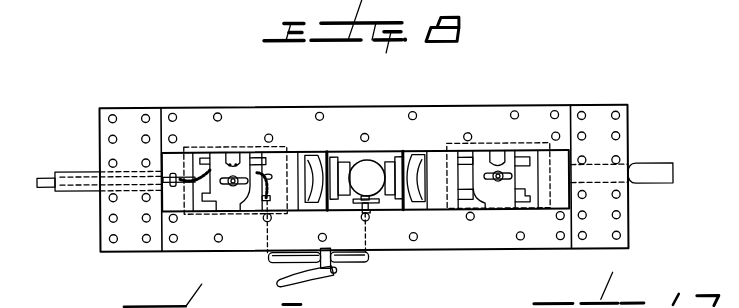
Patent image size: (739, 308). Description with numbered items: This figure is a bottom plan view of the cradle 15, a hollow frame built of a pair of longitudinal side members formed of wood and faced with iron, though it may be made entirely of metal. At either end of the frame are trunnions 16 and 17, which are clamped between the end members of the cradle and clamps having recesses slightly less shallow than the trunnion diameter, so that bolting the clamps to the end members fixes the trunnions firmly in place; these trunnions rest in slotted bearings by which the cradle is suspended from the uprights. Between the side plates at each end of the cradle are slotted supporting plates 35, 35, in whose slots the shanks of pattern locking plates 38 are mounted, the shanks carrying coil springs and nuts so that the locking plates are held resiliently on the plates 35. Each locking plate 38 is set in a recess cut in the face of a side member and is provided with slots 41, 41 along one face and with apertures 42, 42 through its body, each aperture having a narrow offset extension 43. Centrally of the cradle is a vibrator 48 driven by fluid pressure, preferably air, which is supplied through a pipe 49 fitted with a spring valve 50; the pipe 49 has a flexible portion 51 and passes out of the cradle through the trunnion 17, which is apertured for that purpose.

The cradle 15 is at (438, 118).
The trunnion 16 is at (668, 165).
The trunnion 17 is at (76, 189).
The slotted supporting plate 35 is at (230, 200).
The pattern locking plate 38 is at (201, 205).
The slot 41 is at (283, 160).
The aperture 42 is at (209, 158).
The narrow offset extension 43 is at (203, 157).
The vibrator 48 is at (376, 161).
The pipe 49 is at (355, 265).
The spring valve 50 is at (323, 273).
The flexible portion 51 is at (272, 177).